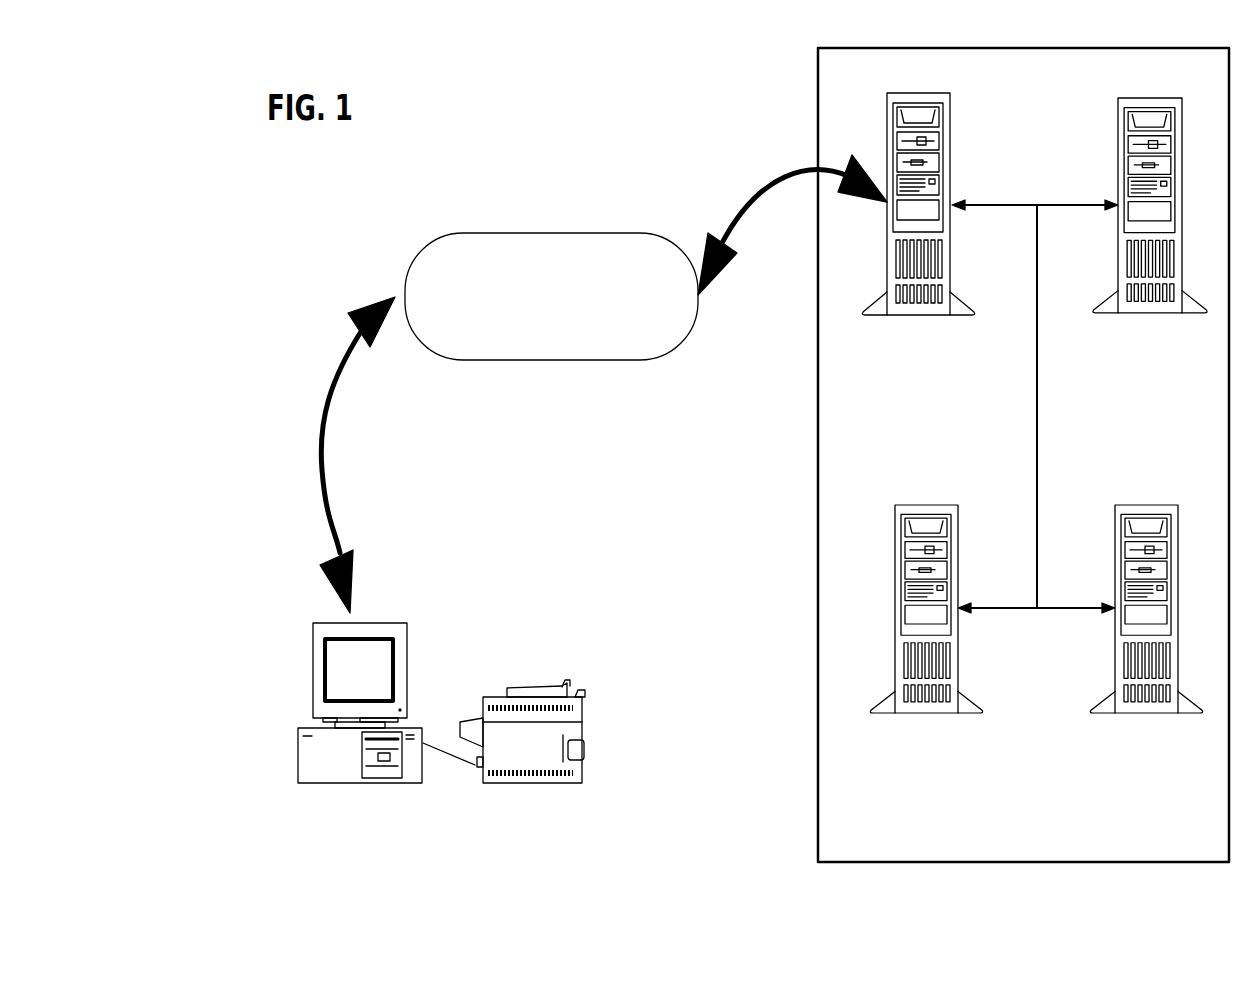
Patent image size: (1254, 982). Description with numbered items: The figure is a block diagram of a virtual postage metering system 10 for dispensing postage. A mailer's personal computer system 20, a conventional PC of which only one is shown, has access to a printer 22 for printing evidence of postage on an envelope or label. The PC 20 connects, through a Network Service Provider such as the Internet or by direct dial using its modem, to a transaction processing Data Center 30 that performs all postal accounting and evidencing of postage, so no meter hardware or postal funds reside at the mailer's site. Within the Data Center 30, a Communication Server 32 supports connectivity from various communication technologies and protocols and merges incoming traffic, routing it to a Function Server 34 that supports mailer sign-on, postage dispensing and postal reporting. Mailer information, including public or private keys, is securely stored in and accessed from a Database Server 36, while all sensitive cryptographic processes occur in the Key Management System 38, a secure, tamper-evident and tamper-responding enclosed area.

The virtual postage metering system 10 is at (338, 255).
The personal computer system 20 is at (270, 676).
The printer 22 is at (583, 737).
The Data Center 30 is at (812, 455).
The Communication Server 32 is at (957, 123).
The Function Server 34 is at (1117, 158).
The Database Server 36 is at (1115, 675).
The Key Management System 38 is at (960, 643).